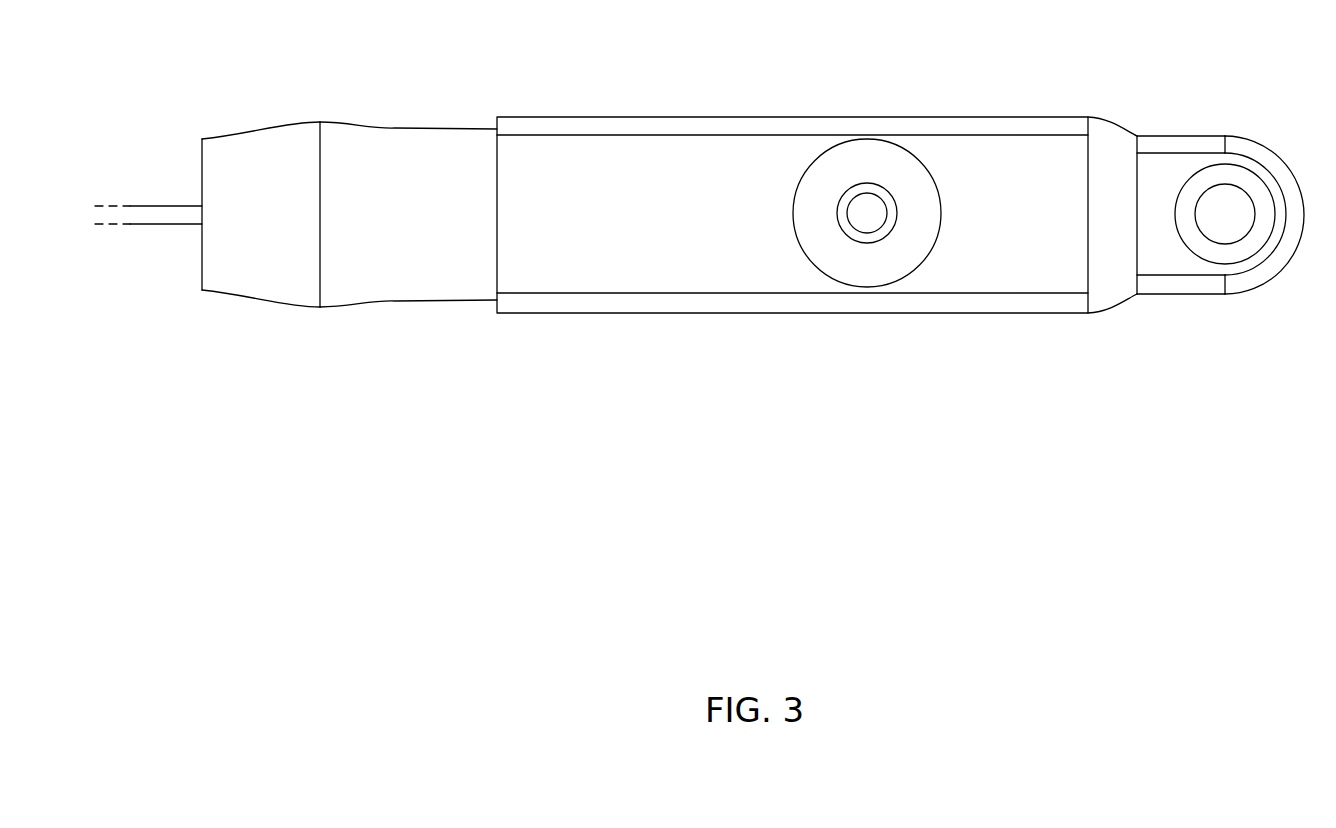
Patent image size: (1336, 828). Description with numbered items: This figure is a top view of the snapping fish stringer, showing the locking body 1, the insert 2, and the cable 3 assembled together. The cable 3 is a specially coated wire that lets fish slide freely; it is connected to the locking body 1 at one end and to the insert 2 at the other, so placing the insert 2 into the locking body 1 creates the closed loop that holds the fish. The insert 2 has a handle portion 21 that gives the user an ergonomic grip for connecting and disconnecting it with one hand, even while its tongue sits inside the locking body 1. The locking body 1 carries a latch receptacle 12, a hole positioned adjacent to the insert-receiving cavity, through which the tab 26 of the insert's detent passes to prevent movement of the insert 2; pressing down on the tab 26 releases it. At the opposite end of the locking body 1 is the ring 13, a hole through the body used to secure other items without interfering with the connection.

The locking body 1 is at (917, 73).
The insert 2 is at (349, 232).
The cable 3 is at (162, 186).
The latch receptacle 12 is at (836, 172).
The ring 13 is at (1205, 155).
The handle portion 21 is at (377, 288).
The tab 26 is at (877, 213).